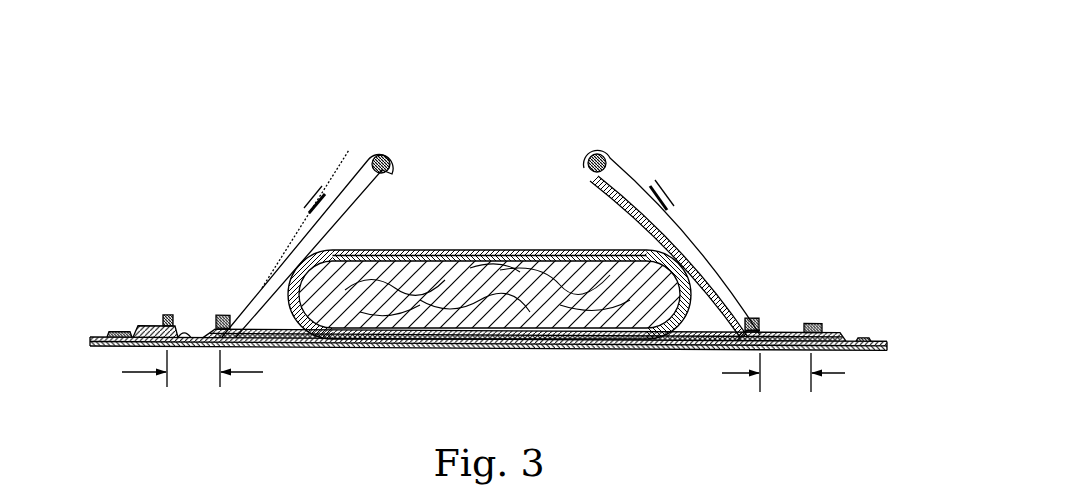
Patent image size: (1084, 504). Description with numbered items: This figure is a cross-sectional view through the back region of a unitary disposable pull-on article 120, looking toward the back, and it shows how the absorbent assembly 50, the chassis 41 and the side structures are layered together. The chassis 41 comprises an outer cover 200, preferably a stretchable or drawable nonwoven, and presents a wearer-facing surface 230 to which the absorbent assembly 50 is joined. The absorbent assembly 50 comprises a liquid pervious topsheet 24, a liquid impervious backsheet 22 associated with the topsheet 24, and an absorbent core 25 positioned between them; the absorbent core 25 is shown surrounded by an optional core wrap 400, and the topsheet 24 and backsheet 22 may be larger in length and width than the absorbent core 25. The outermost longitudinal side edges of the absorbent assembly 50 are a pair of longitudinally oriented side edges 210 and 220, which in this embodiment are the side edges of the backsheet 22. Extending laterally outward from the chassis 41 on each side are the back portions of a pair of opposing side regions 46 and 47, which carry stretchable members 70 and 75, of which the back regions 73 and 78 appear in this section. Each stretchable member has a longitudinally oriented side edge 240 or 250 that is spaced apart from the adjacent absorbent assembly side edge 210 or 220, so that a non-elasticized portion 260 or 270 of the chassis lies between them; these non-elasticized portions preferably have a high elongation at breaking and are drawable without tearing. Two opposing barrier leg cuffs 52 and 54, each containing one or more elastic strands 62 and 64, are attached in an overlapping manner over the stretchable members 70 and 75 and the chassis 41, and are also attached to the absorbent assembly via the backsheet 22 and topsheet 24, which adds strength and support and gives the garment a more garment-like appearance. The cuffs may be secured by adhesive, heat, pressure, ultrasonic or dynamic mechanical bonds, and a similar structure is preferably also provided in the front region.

The disposable pull-on article 120 is at (617, 81).
The backsheet 22 is at (393, 348).
The topsheet 24 is at (477, 250).
The absorbent core 25 is at (577, 257).
The chassis 41 is at (548, 348).
The side region 46 is at (120, 349).
The side region 47 is at (850, 362).
The absorbent assembly 50 is at (489, 238).
The barrier leg cuff 52 is at (353, 158).
The barrier leg cuff 54 is at (652, 186).
The elastic strand 62 is at (392, 156).
The elastic strand 64 is at (613, 148).
The stretchable member 70 is at (118, 330).
The back region of stretchable member 73 is at (107, 336).
The stretchable member 75 is at (866, 333).
The back region of stretchable member 78 is at (873, 340).
The outer cover 200 is at (319, 345).
The longitudinally oriented side edge 210 is at (753, 318).
The longitudinally oriented side edge 220 is at (226, 312).
The wearer-facing surface 230 is at (440, 348).
The longitudinally oriented side edge 240 is at (815, 320).
The longitudinally oriented side edge 250 is at (168, 313).
The non-elasticized portion 260 is at (787, 326).
The non-elasticized portion 270 is at (197, 323).
The core wrap 400 is at (418, 250).